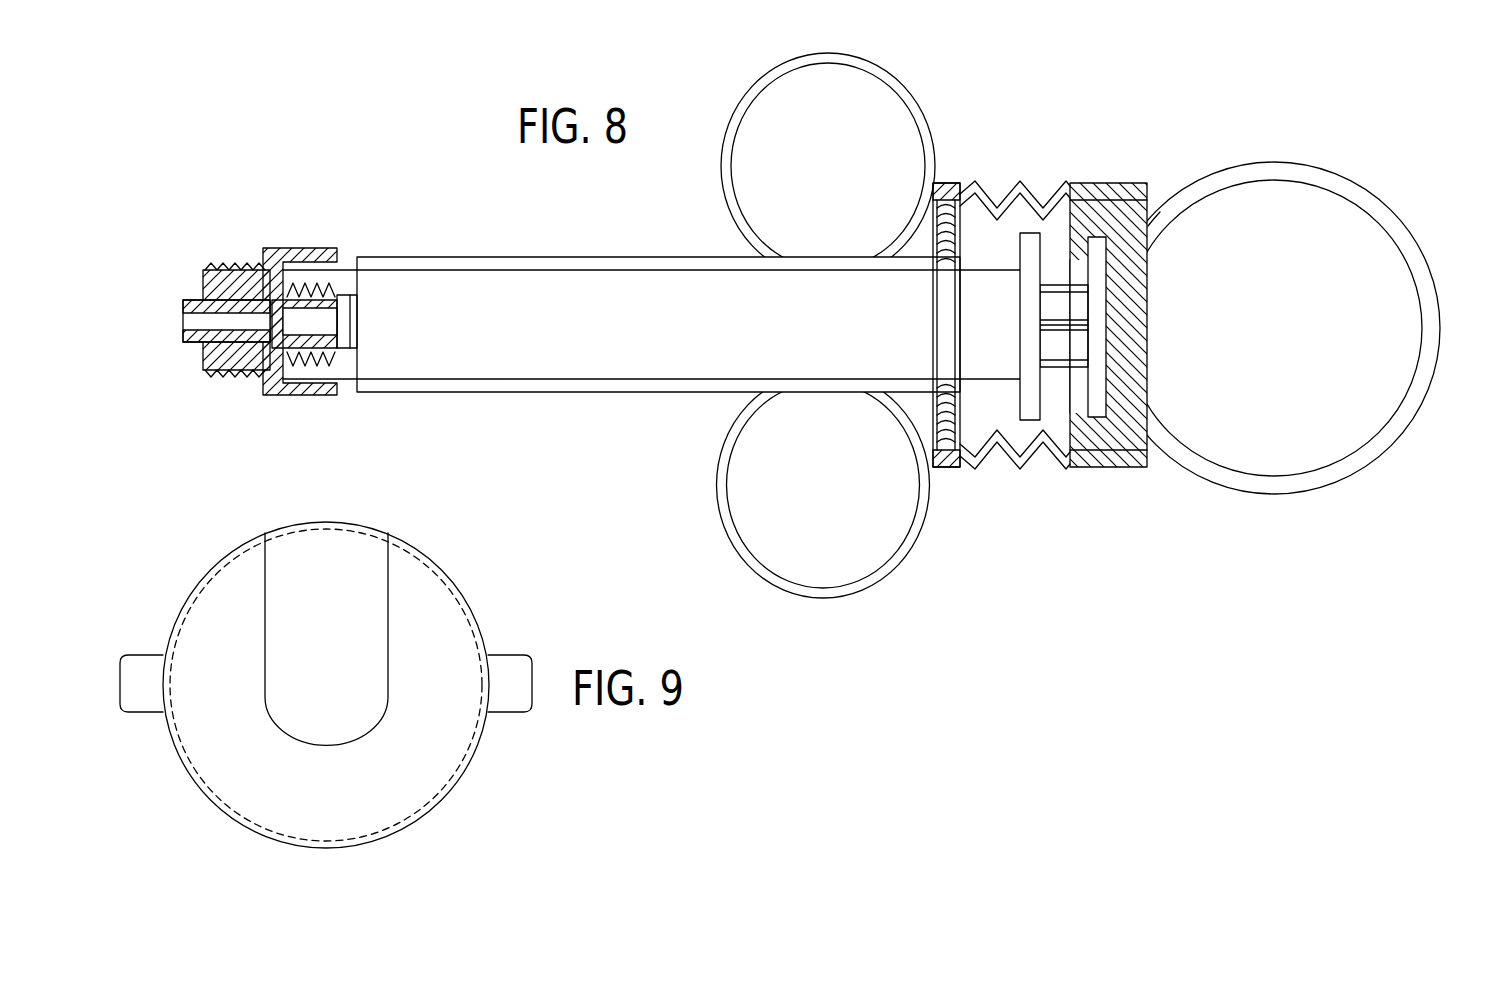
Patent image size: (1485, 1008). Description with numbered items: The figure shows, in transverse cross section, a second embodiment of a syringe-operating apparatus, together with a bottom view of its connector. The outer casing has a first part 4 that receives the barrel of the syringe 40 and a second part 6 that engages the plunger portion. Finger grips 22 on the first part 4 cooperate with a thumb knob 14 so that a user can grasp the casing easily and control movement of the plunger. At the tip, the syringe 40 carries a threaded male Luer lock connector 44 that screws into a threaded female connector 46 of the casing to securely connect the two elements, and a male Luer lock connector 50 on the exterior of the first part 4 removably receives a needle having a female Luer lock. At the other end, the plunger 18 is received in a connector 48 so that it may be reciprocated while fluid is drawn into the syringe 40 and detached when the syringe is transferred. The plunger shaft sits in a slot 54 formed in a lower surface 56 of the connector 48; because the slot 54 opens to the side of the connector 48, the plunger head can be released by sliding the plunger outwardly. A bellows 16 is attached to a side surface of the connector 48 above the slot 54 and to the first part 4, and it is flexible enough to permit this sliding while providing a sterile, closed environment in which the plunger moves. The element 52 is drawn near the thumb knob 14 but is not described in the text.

In FIG. 8, the first part 4 is at (518, 256).
In FIG. 8, the second part 6 is at (1028, 135).
In FIG. 8, the thumb knob 14 is at (1313, 180).
In FIG. 9, the thumb knob 14 is at (512, 668).
In FIG. 8, the bellows 16 is at (978, 467).
In FIG. 8, the plunger 18 is at (1090, 312).
In FIG. 8, the finger grips 22 is at (836, 54).
In FIG. 8, the syringe 40 is at (665, 332).
In FIG. 8, the male Luer lock connector 44 is at (343, 259).
In FIG. 8, the female connector 46 is at (290, 280).
In FIG. 8, the connector 48 is at (1143, 462).
In FIG. 9, the connector 48 is at (450, 790).
In FIG. 8, the male Luer lock connector 50 is at (180, 380).
In FIG. 8, the ring attachment 52 is at (1150, 228).
In FIG. 8, the slot 54 is at (1076, 272).
In FIG. 9, the slot 54 is at (388, 622).
In FIG. 8, the lower surface 56 is at (958, 222).
In FIG. 9, the lower surface 56 is at (314, 808).